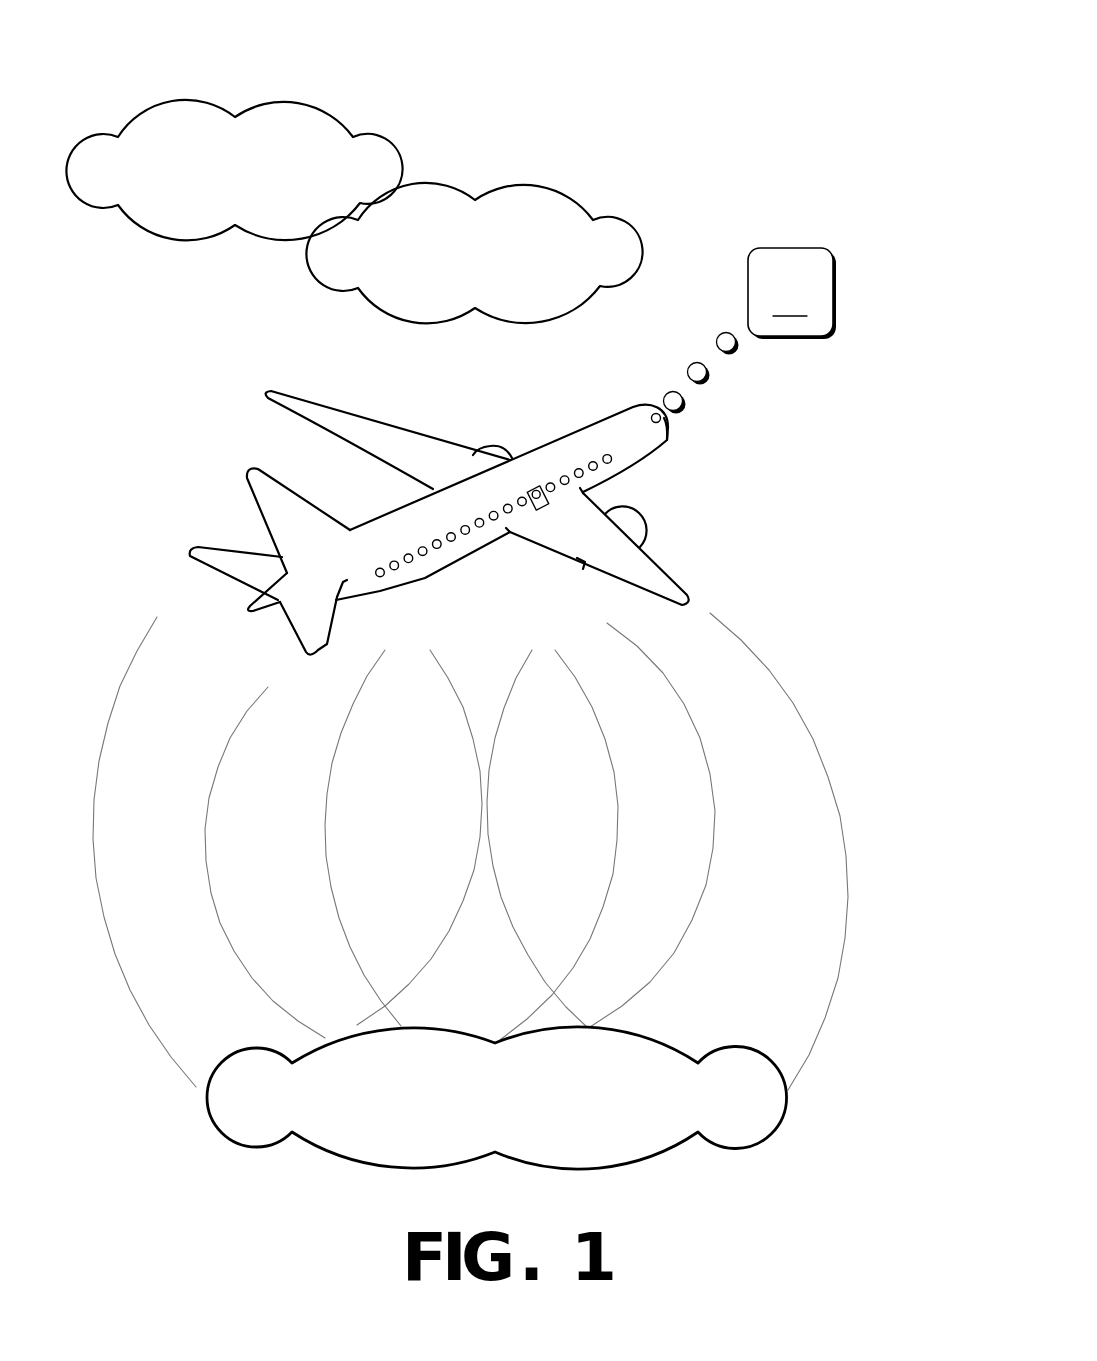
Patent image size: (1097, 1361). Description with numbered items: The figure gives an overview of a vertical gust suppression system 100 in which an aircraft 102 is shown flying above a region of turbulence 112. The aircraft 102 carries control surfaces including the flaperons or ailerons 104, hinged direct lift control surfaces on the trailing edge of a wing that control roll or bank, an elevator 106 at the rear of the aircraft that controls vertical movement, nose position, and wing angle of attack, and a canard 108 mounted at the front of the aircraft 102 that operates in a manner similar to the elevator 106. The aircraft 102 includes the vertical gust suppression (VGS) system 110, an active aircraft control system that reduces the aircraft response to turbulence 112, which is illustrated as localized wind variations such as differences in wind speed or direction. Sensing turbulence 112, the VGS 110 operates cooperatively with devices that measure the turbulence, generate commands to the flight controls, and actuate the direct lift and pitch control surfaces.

The vertical gust suppression (VGS) system 100 is at (703, 66).
The aircraft 102 is at (600, 403).
The flaperons or ailerons 104 is at (370, 460).
The elevator 106 is at (242, 598).
The canard 108 is at (677, 436).
The vertical gust suppression (VGS) system 110 is at (773, 316).
The turbulence 112 is at (478, 1121).